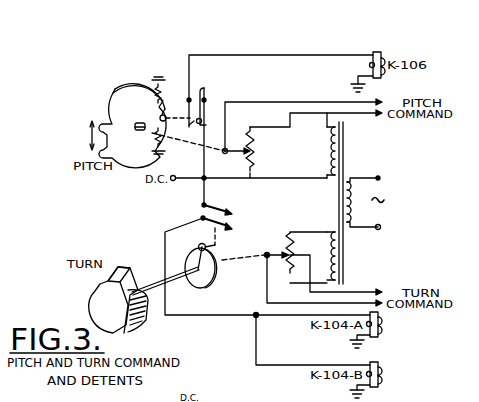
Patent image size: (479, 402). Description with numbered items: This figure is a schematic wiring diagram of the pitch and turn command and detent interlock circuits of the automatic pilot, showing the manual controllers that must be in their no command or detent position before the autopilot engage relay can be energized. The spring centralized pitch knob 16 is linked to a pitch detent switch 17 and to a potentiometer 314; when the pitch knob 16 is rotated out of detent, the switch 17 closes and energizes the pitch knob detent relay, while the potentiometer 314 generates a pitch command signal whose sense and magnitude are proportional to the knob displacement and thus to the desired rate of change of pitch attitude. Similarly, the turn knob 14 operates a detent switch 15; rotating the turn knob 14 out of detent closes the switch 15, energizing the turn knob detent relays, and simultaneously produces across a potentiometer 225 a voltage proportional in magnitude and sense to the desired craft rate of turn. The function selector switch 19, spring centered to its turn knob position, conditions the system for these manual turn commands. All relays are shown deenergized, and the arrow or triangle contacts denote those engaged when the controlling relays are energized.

The turn knob 14 is at (128, 266).
The detent switch 15 is at (230, 218).
The pitch knob 16 is at (114, 97).
The switch 17 is at (210, 125).
The function selector switch 19 is at (473, 340).
The potentiometer 225 is at (267, 269).
The potentiometer 314 is at (245, 162).